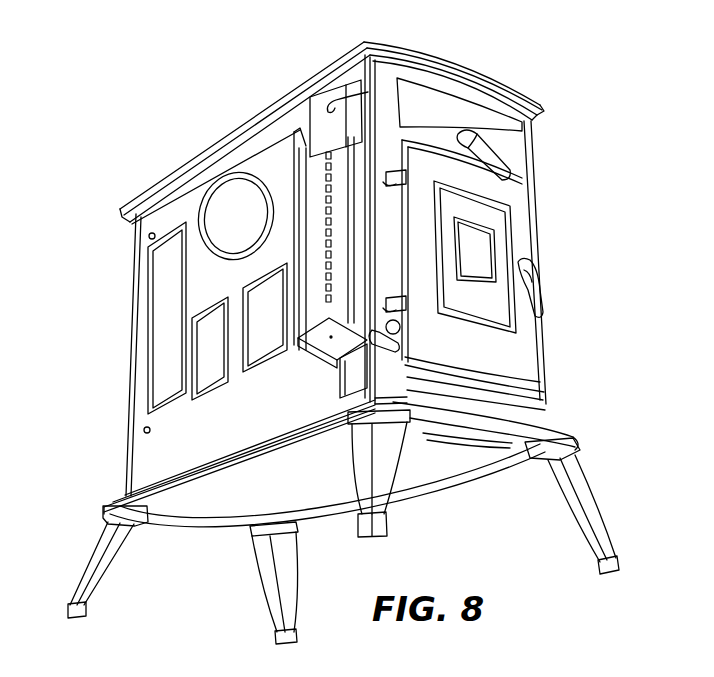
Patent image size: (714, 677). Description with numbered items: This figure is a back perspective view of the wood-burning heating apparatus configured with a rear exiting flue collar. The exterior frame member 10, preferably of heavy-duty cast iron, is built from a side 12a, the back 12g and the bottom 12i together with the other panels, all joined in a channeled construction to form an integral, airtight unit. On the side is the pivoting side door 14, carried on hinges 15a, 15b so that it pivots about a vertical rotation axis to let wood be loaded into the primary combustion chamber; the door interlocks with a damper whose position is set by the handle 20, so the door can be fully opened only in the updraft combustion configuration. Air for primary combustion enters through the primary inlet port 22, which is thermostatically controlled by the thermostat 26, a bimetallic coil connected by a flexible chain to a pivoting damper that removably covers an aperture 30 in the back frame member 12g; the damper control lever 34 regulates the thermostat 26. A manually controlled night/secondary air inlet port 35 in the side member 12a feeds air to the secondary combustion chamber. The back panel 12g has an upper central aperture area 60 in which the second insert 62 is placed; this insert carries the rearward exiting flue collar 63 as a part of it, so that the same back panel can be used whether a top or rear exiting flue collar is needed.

The exterior frame member 10 is at (239, 128).
The side 12a is at (445, 119).
The back 12g is at (204, 446).
The bottom 12i is at (205, 512).
The pivoting side door 14 is at (486, 260).
The hinge 15a is at (407, 173).
The hinge 15b is at (398, 296).
The handle 20 is at (478, 132).
The primary inlet port 22 is at (332, 366).
The thermostat 26 is at (353, 84).
The aperture 30 is at (353, 375).
The damper control lever 34 is at (327, 108).
The night/secondary air inlet port 35 is at (401, 326).
The upper central aperture area 60 is at (205, 274).
The second insert 62 is at (281, 172).
The rearward exiting flue collar 63 is at (208, 181).